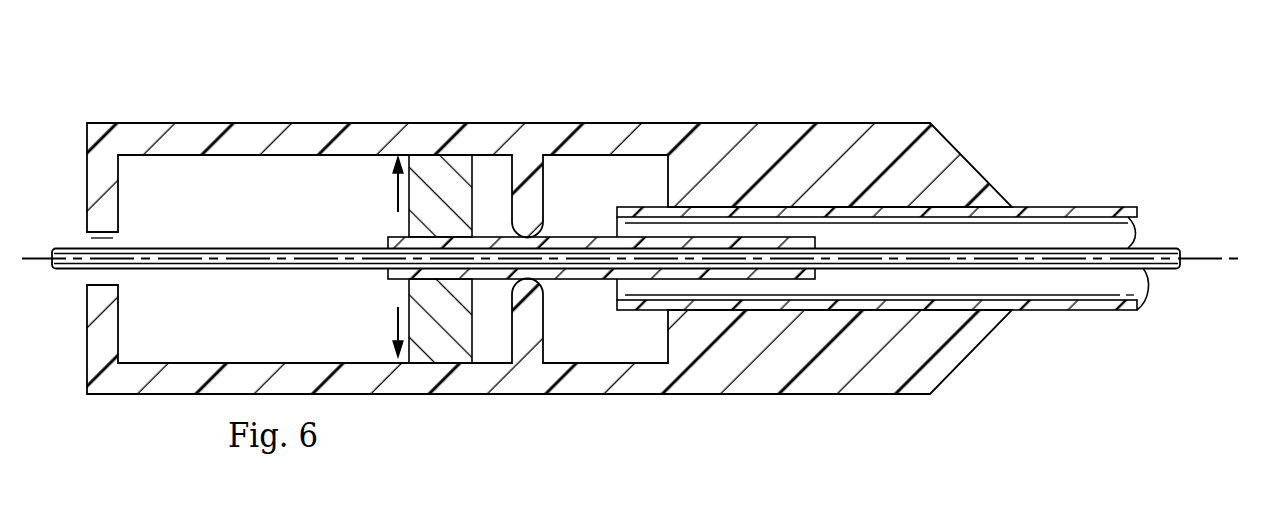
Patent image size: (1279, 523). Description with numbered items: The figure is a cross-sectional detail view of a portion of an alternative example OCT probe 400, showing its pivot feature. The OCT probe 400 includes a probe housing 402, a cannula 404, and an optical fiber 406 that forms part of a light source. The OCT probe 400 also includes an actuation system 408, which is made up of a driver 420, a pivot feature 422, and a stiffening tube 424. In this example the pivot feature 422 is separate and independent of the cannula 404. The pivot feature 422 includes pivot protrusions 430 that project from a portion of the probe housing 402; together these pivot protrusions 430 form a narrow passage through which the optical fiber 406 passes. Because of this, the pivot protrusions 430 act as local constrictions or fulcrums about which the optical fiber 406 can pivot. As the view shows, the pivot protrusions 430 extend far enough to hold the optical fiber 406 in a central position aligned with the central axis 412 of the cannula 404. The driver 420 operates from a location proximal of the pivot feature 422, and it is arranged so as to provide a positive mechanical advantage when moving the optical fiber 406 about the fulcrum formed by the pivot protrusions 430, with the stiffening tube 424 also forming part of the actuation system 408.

The OCT probe 400 is at (634, 243).
The probe housing 402 is at (759, 399).
The cannula 404 is at (1094, 206).
The optical fiber 406 is at (1166, 247).
The actuation system 408 is at (431, 112).
The central axis 412 is at (1217, 263).
The driver 420 is at (408, 228).
The pivot feature 422 is at (550, 197).
The stiffening tube 424 is at (588, 282).
The pivot protrusions 430 is at (512, 174).